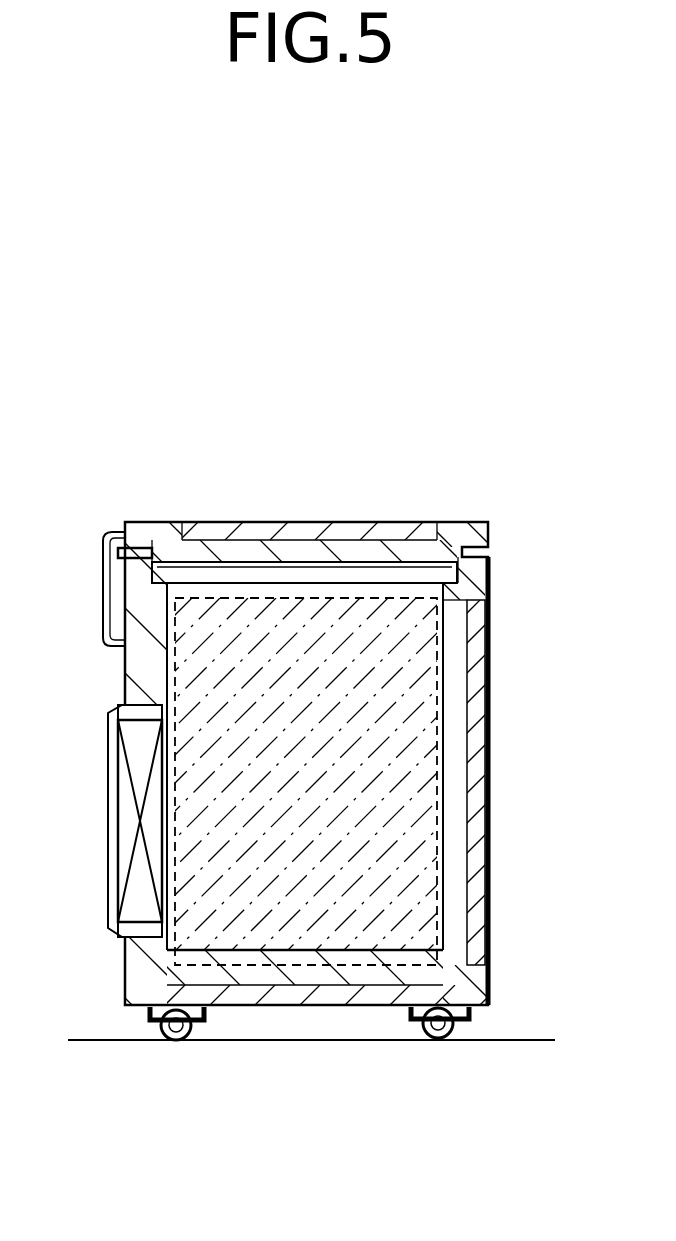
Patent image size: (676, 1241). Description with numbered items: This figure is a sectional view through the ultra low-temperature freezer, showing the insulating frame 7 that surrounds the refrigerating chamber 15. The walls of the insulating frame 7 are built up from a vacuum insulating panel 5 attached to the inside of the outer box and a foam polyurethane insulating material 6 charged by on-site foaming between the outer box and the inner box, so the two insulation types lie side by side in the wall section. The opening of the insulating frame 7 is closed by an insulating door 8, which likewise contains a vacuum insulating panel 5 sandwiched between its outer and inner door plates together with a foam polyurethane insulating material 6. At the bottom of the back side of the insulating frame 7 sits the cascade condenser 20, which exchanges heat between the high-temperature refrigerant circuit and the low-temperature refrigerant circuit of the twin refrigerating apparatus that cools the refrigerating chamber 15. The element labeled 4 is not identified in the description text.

The housing body 4 is at (477, 983).
The vacuum insulating panel 5 is at (242, 602).
The foam polyurethane insulating material 6 is at (377, 538).
The insulating frame 7 is at (492, 578).
The insulating door 8 is at (460, 520).
The refrigerating chamber 15 is at (350, 762).
The cascade condenser 20 is at (135, 758).